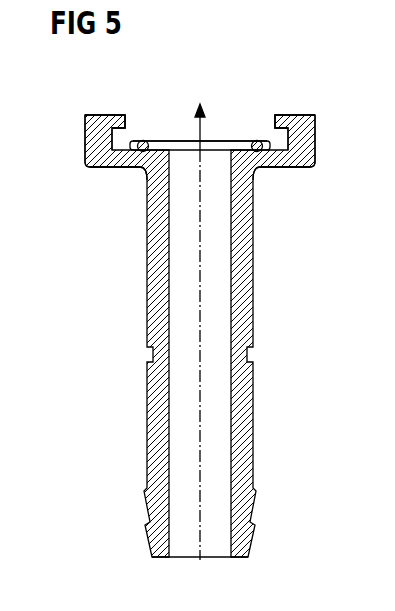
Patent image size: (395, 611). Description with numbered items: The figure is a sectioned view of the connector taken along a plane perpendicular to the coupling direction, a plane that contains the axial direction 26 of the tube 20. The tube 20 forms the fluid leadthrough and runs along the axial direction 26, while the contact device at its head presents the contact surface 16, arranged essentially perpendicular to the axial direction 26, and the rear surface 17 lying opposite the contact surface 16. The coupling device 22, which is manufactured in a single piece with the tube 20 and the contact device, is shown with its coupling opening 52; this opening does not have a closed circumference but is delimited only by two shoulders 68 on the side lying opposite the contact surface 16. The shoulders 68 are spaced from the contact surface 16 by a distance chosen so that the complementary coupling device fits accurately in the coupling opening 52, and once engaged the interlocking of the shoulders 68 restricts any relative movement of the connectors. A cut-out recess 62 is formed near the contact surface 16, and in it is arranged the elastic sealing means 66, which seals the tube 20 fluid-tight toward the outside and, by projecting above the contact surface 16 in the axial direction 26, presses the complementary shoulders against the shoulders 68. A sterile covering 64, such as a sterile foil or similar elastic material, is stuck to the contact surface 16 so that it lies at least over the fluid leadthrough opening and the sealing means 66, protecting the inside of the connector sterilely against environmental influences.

The contact surface 16 is at (88, 143).
The rear surface 17 is at (102, 167).
The tube 20 is at (233, 448).
The coupling device 22 is at (315, 117).
The axial direction 26 is at (204, 343).
The coupling opening 52 is at (287, 76).
The cut-out recess 62 is at (262, 167).
The sterile covering 64 is at (207, 141).
The sealing means 66 is at (143, 141).
The shoulders 68 is at (120, 132).